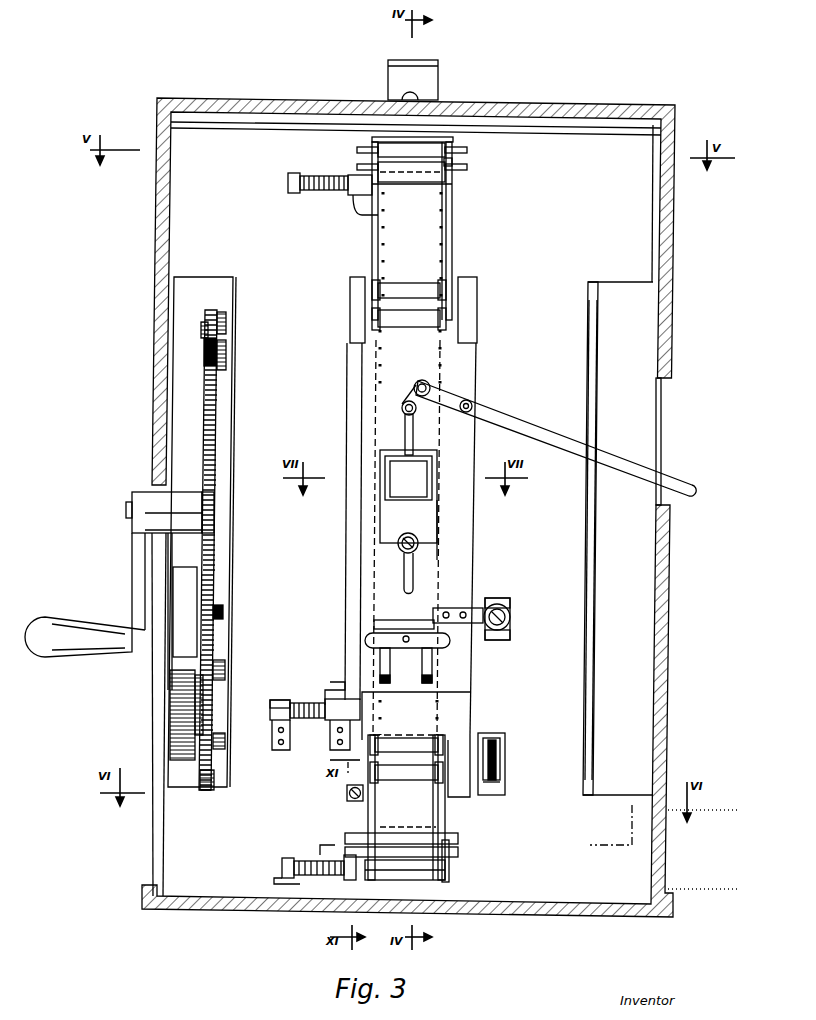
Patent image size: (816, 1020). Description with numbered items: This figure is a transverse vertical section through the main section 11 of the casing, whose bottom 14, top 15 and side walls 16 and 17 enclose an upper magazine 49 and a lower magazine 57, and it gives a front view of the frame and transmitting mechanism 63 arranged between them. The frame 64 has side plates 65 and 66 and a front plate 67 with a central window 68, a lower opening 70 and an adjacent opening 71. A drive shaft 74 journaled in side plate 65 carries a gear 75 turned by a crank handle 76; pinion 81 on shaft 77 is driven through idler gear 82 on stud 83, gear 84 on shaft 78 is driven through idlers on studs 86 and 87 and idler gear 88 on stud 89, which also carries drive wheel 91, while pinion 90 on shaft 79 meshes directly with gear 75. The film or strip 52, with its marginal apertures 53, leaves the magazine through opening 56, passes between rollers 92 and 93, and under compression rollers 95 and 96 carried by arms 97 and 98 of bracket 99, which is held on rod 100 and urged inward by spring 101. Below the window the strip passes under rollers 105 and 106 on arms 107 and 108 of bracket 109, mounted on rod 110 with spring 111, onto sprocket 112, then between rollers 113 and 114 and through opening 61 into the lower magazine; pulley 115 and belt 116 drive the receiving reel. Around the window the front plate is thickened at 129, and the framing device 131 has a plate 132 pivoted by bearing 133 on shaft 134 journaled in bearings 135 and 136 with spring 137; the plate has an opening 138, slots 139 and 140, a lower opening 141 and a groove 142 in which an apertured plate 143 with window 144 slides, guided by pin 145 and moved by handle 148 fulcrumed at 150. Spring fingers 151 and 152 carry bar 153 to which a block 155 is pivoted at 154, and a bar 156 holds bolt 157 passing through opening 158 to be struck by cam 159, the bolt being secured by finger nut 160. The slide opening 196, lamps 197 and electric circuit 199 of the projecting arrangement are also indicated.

The main section 11 is at (156, 180).
The bottom 14 is at (232, 909).
The top 15 is at (545, 106).
The side wall 16 is at (668, 262).
The side wall 17 is at (160, 232).
The magazine 49 is at (622, 284).
The film or strip 52 is at (378, 338).
The apertures 53 is at (378, 357).
The opening 56 is at (456, 139).
The magazine 57 is at (611, 792).
The opening 61 is at (450, 861).
The mechanism 63 is at (206, 490).
The frame 64 is at (600, 346).
The side plate 65 is at (228, 447).
The side plate 66 is at (590, 352).
The front plate 67 is at (598, 400).
The window 68 is at (440, 522).
The opening 70 is at (471, 741).
The opening 71 is at (506, 732).
The drive shaft 74 is at (126, 508).
The gear 75 is at (214, 512).
The crank handle 76 is at (140, 570).
The shaft 77 is at (205, 328).
The shaft 78 is at (205, 772).
The shaft 79 is at (200, 616).
The pinion 81 is at (224, 313).
The idler gear 82 is at (226, 362).
The stud 83 is at (205, 362).
The gear 84 is at (214, 777).
The stud 86 is at (222, 740).
The stud 87 is at (196, 728).
The idler gear 88 is at (226, 665).
The stud 89 is at (166, 665).
The pinion 90 is at (222, 610).
The drive wheel 91 is at (172, 694).
The roller 92 is at (372, 143).
The roller 93 is at (455, 172).
The compression roller 95 is at (400, 286).
The compression roller 96 is at (414, 320).
The arm 97 is at (372, 258).
The arm 98 is at (452, 264).
The bracket 99 is at (453, 237).
The rod 100 is at (420, 186).
The spring 101 is at (320, 193).
The compression roller 105 is at (399, 745).
The compression roller 106 is at (405, 781).
The arm 107 is at (366, 808).
The arm 108 is at (446, 800).
The bracket 109 is at (446, 815).
The rod 110 is at (410, 871).
The spring 111 is at (318, 861).
The sprocket 112 is at (345, 784).
The roller 113 is at (460, 838).
The roller 114 is at (460, 851).
The pulley 115 is at (506, 769).
The belt 116 is at (498, 746).
The thick part 129 is at (468, 343).
The framing device 131 is at (347, 394).
The plate 132 is at (352, 428).
The bearing 133 is at (376, 706).
The shaft 134 is at (272, 712).
The bearing 135 is at (280, 700).
The bearing 136 is at (322, 722).
The spring 137 is at (307, 702).
The opening 138 is at (440, 533).
The slot 139 is at (404, 440).
The slot 140 is at (403, 578).
The opening 141 is at (380, 623).
The groove 142 is at (440, 578).
The plate 143 is at (388, 520).
The window 144 is at (386, 480).
The pin 145 is at (409, 533).
The handle 148 is at (530, 428).
The fulcrum 150 is at (472, 406).
The spring finger 151 is at (382, 652).
The spring finger 152 is at (430, 655).
The bar 153 is at (370, 639).
The pivot 154 is at (407, 634).
The block 155 is at (392, 616).
The bar 156 is at (455, 608).
The bolt 157 is at (511, 630).
The opening 158 is at (499, 641).
The cam 159 is at (506, 600).
The finger nut 160 is at (511, 617).
The opening 196 is at (401, 409).
The lamps 197 is at (419, 381).
The electric circuit 199 is at (664, 416).